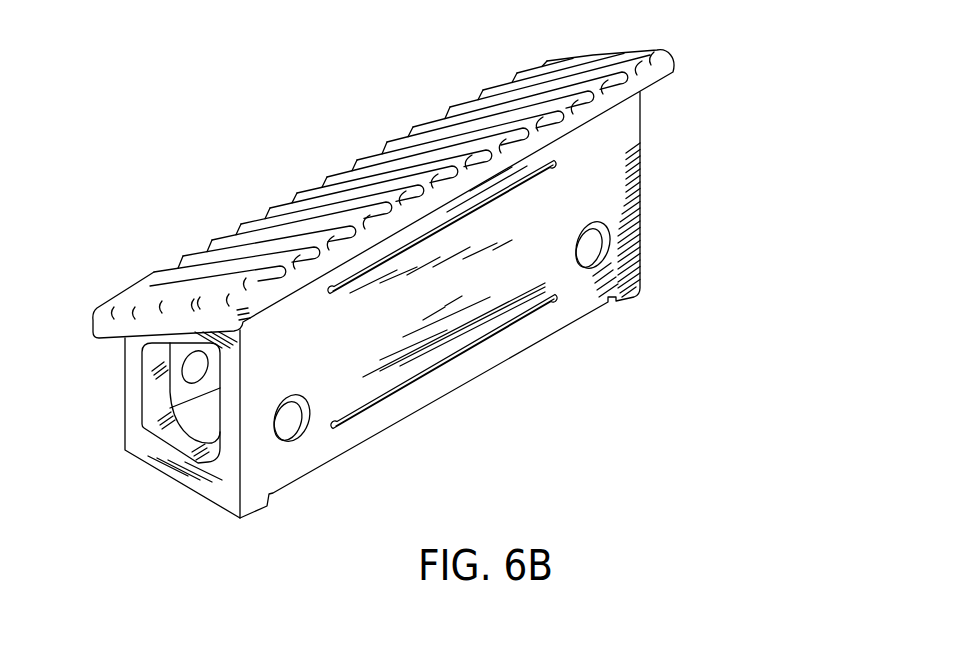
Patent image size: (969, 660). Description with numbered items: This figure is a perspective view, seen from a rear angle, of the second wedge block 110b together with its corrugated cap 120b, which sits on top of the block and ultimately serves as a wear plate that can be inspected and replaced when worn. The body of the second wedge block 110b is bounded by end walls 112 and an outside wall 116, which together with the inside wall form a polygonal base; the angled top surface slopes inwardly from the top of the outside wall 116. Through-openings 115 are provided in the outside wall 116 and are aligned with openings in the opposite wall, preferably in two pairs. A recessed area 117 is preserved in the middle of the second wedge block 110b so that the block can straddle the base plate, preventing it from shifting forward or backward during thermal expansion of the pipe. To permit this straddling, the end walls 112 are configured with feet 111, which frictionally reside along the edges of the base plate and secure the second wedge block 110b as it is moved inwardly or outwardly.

The corrugated cap 120b is at (596, 55).
The outside wall 116 is at (641, 165).
The recessed area 117 is at (440, 390).
The through-opening 115 is at (292, 420).
The foot 111 is at (257, 509).
The second wedge block 110b is at (232, 488).
The end wall 112 is at (160, 497).